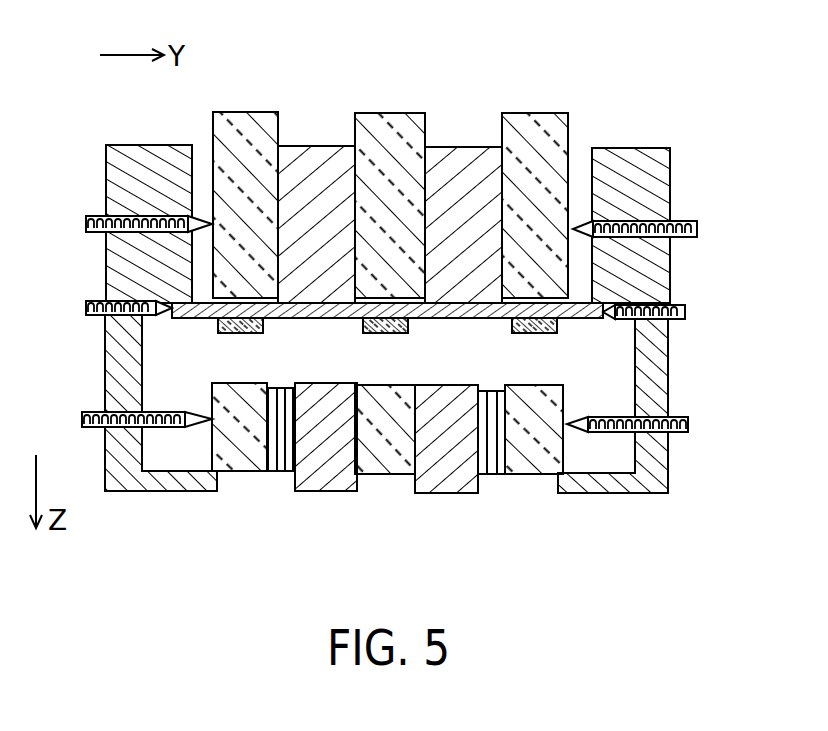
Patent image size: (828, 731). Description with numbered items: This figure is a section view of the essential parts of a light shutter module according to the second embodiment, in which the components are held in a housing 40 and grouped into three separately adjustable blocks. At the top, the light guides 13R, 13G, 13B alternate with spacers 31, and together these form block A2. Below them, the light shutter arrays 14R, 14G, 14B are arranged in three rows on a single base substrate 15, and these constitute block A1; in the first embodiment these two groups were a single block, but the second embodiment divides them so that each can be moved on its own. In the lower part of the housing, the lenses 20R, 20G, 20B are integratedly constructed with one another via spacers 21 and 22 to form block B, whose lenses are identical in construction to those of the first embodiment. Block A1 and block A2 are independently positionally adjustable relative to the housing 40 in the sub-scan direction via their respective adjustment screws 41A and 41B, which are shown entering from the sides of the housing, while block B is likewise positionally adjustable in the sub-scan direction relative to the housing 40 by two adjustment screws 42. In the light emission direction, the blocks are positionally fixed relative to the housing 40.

The housing 40 is at (120, 145).
The light guide 13R is at (250, 112).
The light guide 13G is at (400, 113).
The light guide 13B is at (532, 113).
The spacer 31 is at (318, 146).
The base substrate 15 is at (190, 318).
The light shutter array 14R is at (235, 334).
The light shutter array 14G is at (380, 334).
The light shutter array 14B is at (530, 334).
The lens 20R is at (235, 472).
The lens 20G is at (385, 475).
The lens 20B is at (528, 475).
The spacer 21 is at (325, 492).
The spacer 22 is at (277, 473).
The adjustment screw 41A is at (92, 300).
The adjustment screw 41B is at (100, 215).
The adjustment screw 42 is at (82, 418).
The block A1 is at (597, 344).
The block A2 is at (579, 107).
The block B is at (583, 398).